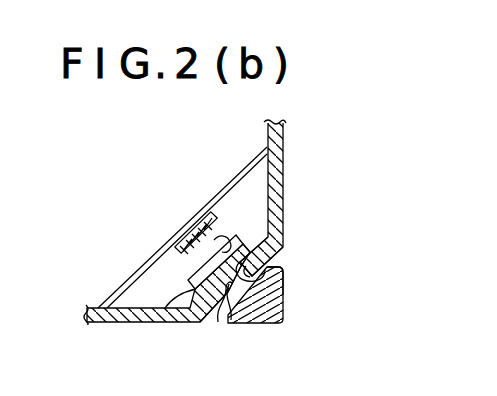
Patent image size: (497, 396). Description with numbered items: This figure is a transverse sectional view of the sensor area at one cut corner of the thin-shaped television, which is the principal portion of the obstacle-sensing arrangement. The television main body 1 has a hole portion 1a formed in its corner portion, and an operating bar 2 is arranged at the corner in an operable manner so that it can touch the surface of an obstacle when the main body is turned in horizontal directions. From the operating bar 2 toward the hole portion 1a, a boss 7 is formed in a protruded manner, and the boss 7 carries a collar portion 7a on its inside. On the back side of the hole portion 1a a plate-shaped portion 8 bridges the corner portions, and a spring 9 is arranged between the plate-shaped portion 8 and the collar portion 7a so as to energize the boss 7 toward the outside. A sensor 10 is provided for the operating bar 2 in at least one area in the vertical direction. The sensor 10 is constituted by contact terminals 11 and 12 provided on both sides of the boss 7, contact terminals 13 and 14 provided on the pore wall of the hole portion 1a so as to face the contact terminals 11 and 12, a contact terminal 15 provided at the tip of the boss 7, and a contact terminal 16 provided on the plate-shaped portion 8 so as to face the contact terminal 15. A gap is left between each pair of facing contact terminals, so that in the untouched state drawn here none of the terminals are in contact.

The television main body 1 is at (286, 146).
The hole portion 1a is at (268, 270).
The operating bar 2 is at (284, 315).
The boss 7 is at (256, 300).
The collar portion 7a is at (163, 308).
The plate-shaped portion 8 is at (150, 262).
The spring 9 is at (187, 246).
The sensor 10 is at (291, 243).
The contact terminal 11 is at (211, 318).
The contact terminal 12 is at (285, 286).
The contact terminal 13 is at (223, 310).
The contact terminal 14 is at (276, 223).
The contact terminal 15 is at (221, 245).
The contact terminal 16 is at (211, 228).